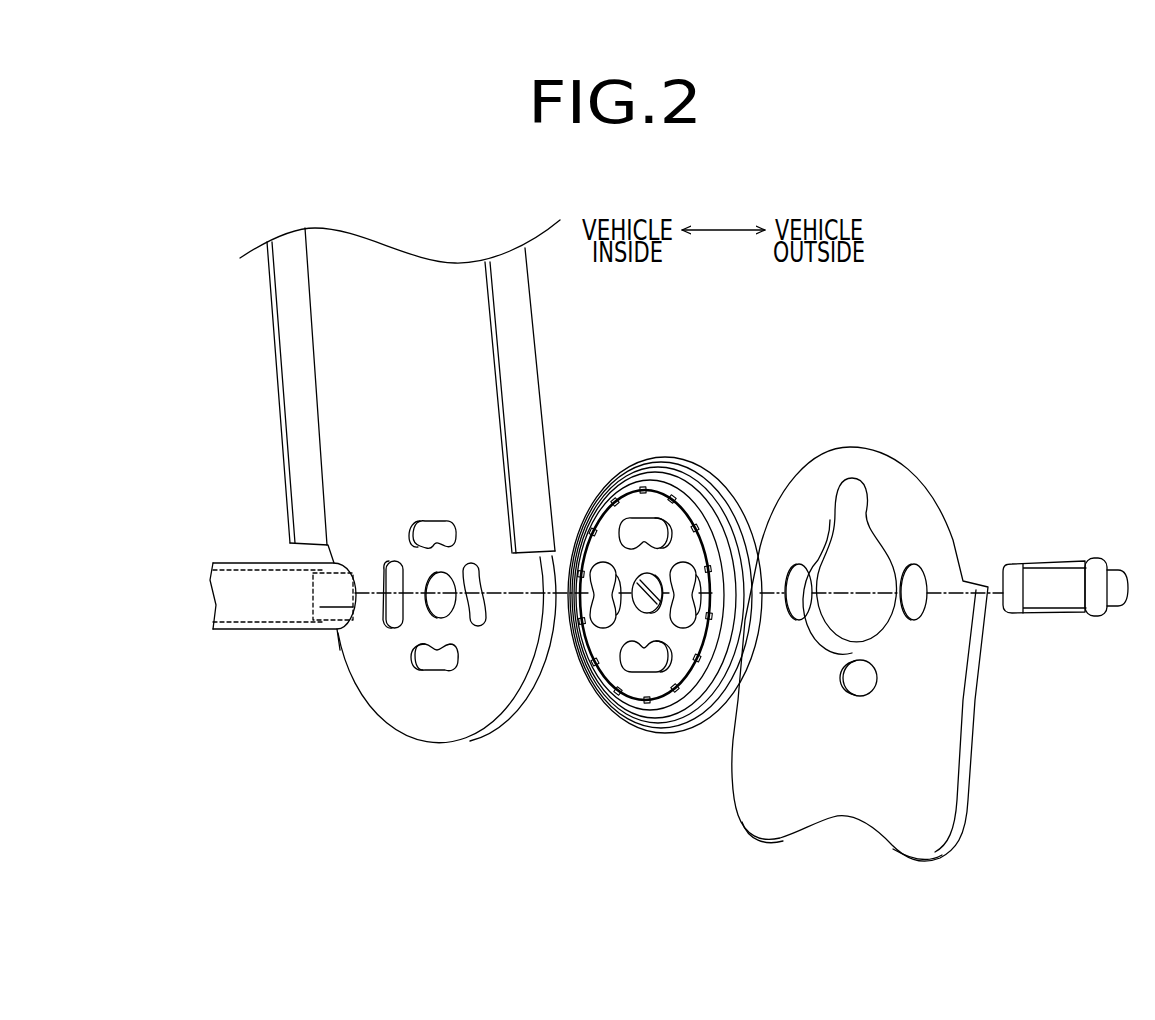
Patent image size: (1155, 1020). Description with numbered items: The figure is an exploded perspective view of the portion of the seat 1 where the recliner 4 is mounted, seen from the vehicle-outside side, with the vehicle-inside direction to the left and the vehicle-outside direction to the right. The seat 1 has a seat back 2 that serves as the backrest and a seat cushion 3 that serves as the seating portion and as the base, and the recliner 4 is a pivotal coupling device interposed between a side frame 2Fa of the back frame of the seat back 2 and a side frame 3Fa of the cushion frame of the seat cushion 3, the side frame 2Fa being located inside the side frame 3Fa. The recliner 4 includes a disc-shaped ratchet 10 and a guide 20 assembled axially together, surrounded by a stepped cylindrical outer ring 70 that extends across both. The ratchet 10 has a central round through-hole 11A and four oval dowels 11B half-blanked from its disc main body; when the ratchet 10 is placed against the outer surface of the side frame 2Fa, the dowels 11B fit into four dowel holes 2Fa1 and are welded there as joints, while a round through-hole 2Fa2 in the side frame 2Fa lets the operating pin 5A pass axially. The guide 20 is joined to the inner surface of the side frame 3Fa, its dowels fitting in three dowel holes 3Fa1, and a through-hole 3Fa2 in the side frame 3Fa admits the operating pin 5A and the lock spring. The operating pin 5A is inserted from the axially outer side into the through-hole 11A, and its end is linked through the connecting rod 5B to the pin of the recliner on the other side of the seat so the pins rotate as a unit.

The seat 1 is at (983, 280).
The seat back 2 is at (562, 320).
The side frame of back frame 2Fa is at (540, 374).
The dowel hole 2Fa1 is at (397, 577).
The round through-hole 2Fa2 is at (447, 583).
The connecting rod 5B is at (258, 580).
The ratchet 10 is at (598, 533).
The guide 20 is at (625, 510).
The dowel 11B is at (648, 528).
The through-hole 11A is at (637, 613).
The outer ring 70 is at (690, 472).
The recliner 4 is at (722, 480).
The seat cushion 3 is at (838, 418).
The side frame of cushion frame 3Fa is at (933, 483).
The through-hole 3Fa2 is at (865, 567).
The dowel hole 3Fa1 is at (865, 677).
The operating pin 5A is at (1055, 577).